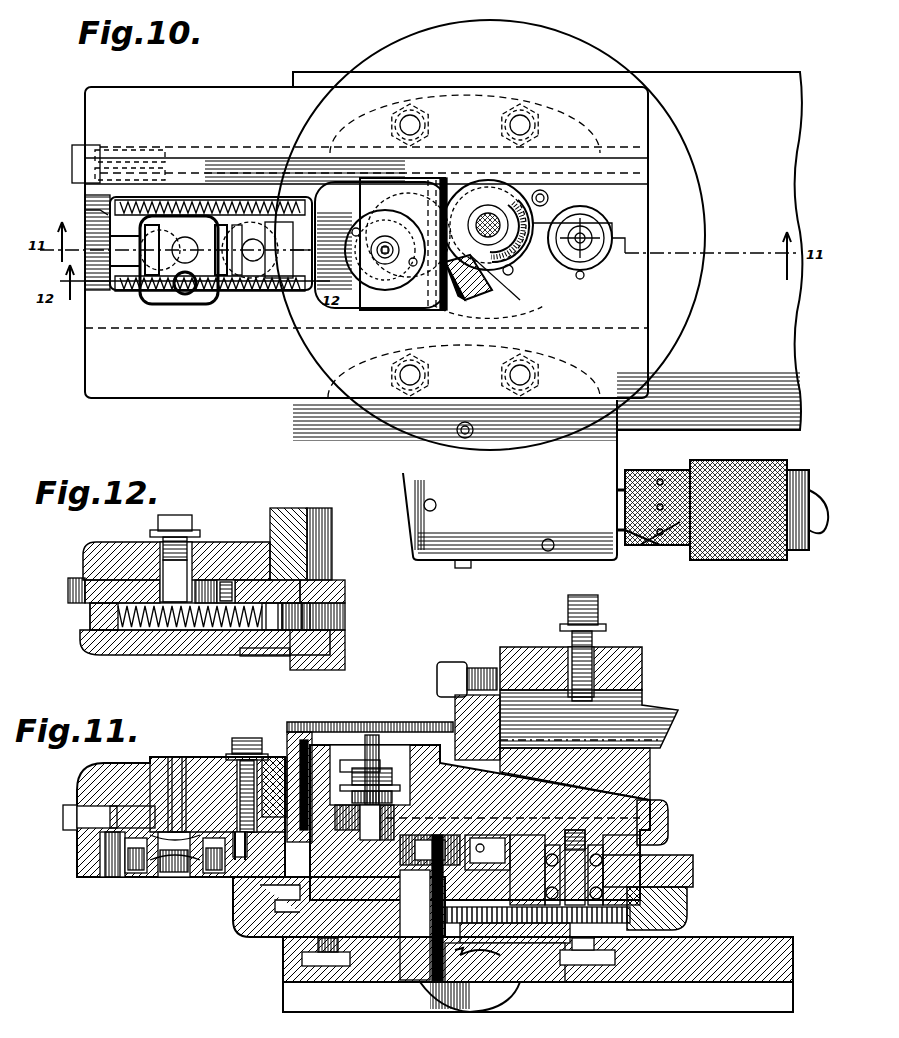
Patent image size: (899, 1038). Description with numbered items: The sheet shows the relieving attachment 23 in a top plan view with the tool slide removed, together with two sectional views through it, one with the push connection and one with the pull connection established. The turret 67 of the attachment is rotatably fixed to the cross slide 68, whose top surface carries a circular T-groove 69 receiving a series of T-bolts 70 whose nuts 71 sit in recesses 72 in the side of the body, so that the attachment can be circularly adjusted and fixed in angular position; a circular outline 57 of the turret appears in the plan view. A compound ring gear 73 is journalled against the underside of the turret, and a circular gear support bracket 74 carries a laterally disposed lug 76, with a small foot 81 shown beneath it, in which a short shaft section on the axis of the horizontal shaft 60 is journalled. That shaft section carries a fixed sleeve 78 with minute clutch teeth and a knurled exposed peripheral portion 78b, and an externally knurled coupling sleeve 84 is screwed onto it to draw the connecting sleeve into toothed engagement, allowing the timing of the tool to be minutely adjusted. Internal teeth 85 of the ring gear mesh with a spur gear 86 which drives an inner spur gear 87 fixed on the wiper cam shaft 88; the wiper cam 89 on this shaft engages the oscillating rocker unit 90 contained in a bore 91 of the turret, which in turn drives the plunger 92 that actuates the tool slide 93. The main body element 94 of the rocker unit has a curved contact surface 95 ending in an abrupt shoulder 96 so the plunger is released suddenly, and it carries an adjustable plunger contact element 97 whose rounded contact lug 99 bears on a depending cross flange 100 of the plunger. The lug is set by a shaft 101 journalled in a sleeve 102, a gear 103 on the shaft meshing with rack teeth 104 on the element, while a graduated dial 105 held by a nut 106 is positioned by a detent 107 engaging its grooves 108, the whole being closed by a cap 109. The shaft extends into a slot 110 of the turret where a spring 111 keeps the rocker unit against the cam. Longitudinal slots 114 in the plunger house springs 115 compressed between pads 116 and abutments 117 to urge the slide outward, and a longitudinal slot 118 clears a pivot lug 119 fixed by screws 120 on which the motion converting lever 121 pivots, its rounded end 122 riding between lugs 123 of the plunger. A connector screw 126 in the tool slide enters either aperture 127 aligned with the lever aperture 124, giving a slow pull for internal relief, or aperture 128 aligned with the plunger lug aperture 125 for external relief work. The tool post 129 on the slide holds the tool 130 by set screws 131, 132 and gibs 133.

In FIG. 10, the carriage body 23 is at (644, 130).
In FIG. 10, the dial wheel 57 is at (676, 297).
In FIG. 10, the horizontal shaft 60 is at (812, 548).
In FIG. 11, the turret 67 is at (695, 858).
In FIG. 10, the cross slide 68 is at (695, 85).
In FIG. 11, the cross slide 68 is at (700, 965).
In FIG. 11, the circular T-groove 69 is at (322, 966).
In FIG. 10, the T-bolts 70 is at (505, 116).
In FIG. 10, the nuts 71 is at (390, 118).
In FIG. 10, the recesses 72 is at (585, 132).
In FIG. 11, the compound ring gear 73 is at (690, 900).
In FIG. 11, the gear support bracket 74 is at (660, 982).
In FIG. 10, the laterally disposed lug 76 is at (520, 548).
In FIG. 10, the sleeve 78 is at (640, 545).
In FIG. 10, the exposed peripheral portion 78b is at (678, 548).
In FIG. 10, the foot 81 is at (466, 568).
In FIG. 10, the coupling sleeve 84 is at (748, 560).
In FIG. 11, the internal teeth 85 is at (265, 930).
In FIG. 11, the spur gear 86 is at (650, 846).
In FIG. 11, the inner spur gear 87 is at (560, 965).
In FIG. 11, the wiper cam shaft 88 is at (470, 810).
In FIG. 11, the wiper cam 89 is at (475, 948).
In FIG. 10, the oscillating rocker unit 90 is at (480, 282).
In FIG. 11, the oscillating rocker unit 90 is at (470, 818).
In FIG. 10, the bore 91 is at (452, 320).
In FIG. 11, the bore 91 is at (435, 1000).
In FIG. 10, the plunger 92 is at (360, 312).
In FIG. 11, the plunger 92 is at (77, 840).
In FIG. 12, the tool slide 93 is at (118, 548).
In FIG. 11, the tool slide 93 is at (195, 772).
In FIG. 10, the main body element 94 is at (505, 300).
In FIG. 10, the curved contact surface 95 is at (483, 182).
In FIG. 10, the abrupt shoulder 96 is at (512, 273).
In FIG. 11, the plunger contact element 97 is at (418, 864).
In FIG. 10, the contact lug 99 is at (425, 180).
In FIG. 11, the contact lug 99 is at (382, 818).
In FIG. 10, the cross flange 100 is at (435, 182).
In FIG. 11, the cross flange 100 is at (435, 845).
In FIG. 11, the shaft 101 is at (362, 815).
In FIG. 11, the sleeve 102 is at (395, 795).
In FIG. 10, the gear 103 is at (388, 282).
In FIG. 11, the gear 103 is at (394, 920).
In FIG. 10, the rack teeth 104 is at (385, 178).
In FIG. 11, the rack teeth 104 is at (395, 900).
In FIG. 10, the graduated dial 105 is at (345, 300).
In FIG. 11, the graduated dial 105 is at (380, 770).
In FIG. 10, the nut 106 is at (385, 242).
In FIG. 11, the nut 106 is at (375, 745).
In FIG. 10, the detent 107 is at (370, 230).
In FIG. 11, the detent 107 is at (358, 776).
In FIG. 11, the grooves 108 is at (395, 786).
In FIG. 11, the cap 109 is at (385, 732).
In FIG. 11, the slot 110 is at (394, 935).
In FIG. 11, the spring 111 is at (394, 950).
In FIG. 10, the longitudinal slots 114 is at (300, 195).
In FIG. 12, the longitudinal slots 114 is at (318, 618).
In FIG. 10, the springs 115 is at (238, 200).
In FIG. 12, the springs 115 is at (225, 630).
In FIG. 10, the pads 116 is at (140, 245).
In FIG. 12, the pads 116 is at (115, 630).
In FIG. 10, the abutments 117 is at (268, 248).
In FIG. 12, the abutments 117 is at (272, 630).
In FIG. 10, the longitudinal slot 118 is at (218, 225).
In FIG. 11, the longitudinal slot 118 is at (105, 855).
In FIG. 10, the pivot lug 119 is at (150, 225).
In FIG. 11, the pivot lug 119 is at (165, 872).
In FIG. 10, the screws 120 is at (125, 292).
In FIG. 11, the screws 120 is at (132, 870).
In FIG. 10, the motion converting lever 121 is at (185, 296).
In FIG. 12, the motion converting lever 121 is at (140, 630).
In FIG. 11, the motion converting lever 121 is at (170, 770).
In FIG. 10, the rounded end 122 is at (235, 225).
In FIG. 10, the lugs 123 is at (95, 215).
In FIG. 11, the lugs 123 is at (120, 806).
In FIG. 10, the aperture 124 is at (165, 300).
In FIG. 12, the aperture 124 is at (230, 580).
In FIG. 10, the aperture 125 is at (270, 292).
In FIG. 11, the aperture 125 is at (240, 862).
In FIG. 12, the connector screw 126 is at (183, 520).
In FIG. 11, the connector screw 126 is at (248, 750).
In FIG. 12, the aperture 127 is at (190, 560).
In FIG. 12, the aperture 128 is at (280, 530).
In FIG. 11, the aperture 128 is at (225, 740).
In FIG. 11, the tool post 129 is at (612, 655).
In FIG. 11, the tool 130 is at (648, 712).
In FIG. 11, the set screw 131 is at (460, 662).
In FIG. 11, the set screw 132 is at (560, 628).
In FIG. 11, the gibs 133 is at (635, 776).